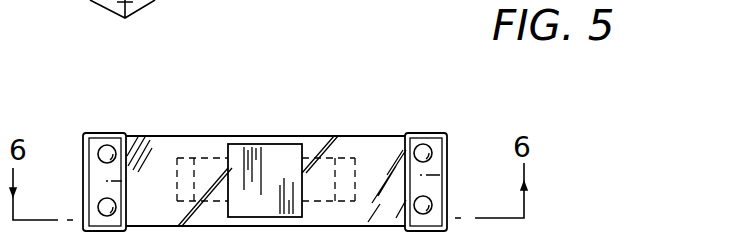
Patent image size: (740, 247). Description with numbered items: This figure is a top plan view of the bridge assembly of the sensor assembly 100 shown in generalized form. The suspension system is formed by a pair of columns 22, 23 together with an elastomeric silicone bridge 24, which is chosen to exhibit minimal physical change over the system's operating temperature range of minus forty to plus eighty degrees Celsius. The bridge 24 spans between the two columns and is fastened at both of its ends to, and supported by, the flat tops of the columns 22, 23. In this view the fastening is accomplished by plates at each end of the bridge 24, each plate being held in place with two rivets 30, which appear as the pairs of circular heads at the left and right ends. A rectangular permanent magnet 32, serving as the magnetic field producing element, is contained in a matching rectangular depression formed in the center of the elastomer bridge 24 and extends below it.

The column 22 is at (83, 171).
The column 23 is at (447, 180).
The elastomeric silicone bridge 24 is at (165, 152).
The rivets 30 is at (101, 204).
The rectangular permanent magnet 32 is at (273, 160).
The sensor assembly 100 is at (342, 157).